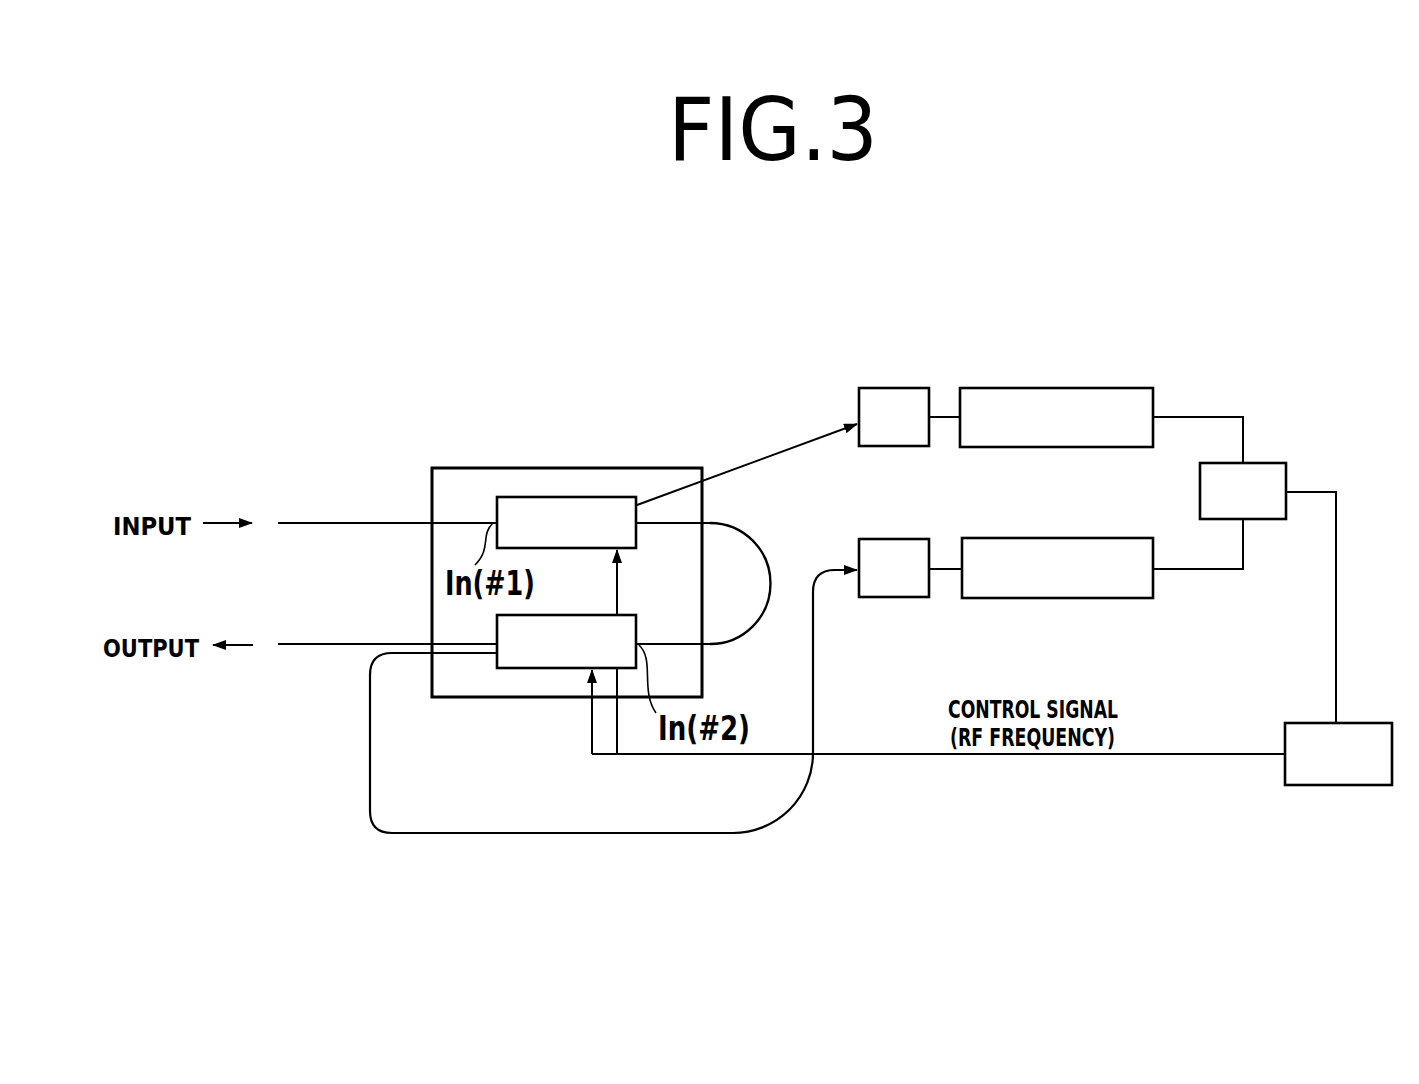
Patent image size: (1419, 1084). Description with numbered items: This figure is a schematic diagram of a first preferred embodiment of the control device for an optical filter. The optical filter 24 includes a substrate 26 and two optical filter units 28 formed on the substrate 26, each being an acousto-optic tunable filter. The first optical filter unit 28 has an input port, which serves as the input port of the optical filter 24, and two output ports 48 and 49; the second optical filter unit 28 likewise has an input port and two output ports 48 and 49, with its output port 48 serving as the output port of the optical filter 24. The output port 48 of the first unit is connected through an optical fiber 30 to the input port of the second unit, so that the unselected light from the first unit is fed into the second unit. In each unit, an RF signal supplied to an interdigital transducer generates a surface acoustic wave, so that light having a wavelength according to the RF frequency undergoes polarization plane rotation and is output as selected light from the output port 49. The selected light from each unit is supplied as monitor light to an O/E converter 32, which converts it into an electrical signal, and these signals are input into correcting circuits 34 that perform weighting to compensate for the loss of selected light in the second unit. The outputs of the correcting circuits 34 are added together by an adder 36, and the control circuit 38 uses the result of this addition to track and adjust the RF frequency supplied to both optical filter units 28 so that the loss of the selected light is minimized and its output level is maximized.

The optical filter 24 is at (622, 452).
The substrate 26 is at (432, 466).
The optical filter unit 28 is at (543, 497).
The optical fiber 30 is at (756, 632).
The O/E converter 32 is at (928, 370).
The correcting circuit 34 is at (1068, 370).
The adder 36 is at (1255, 462).
The control circuit 38 is at (1340, 787).
The output port 48 is at (733, 526).
The output port 49 is at (777, 452).